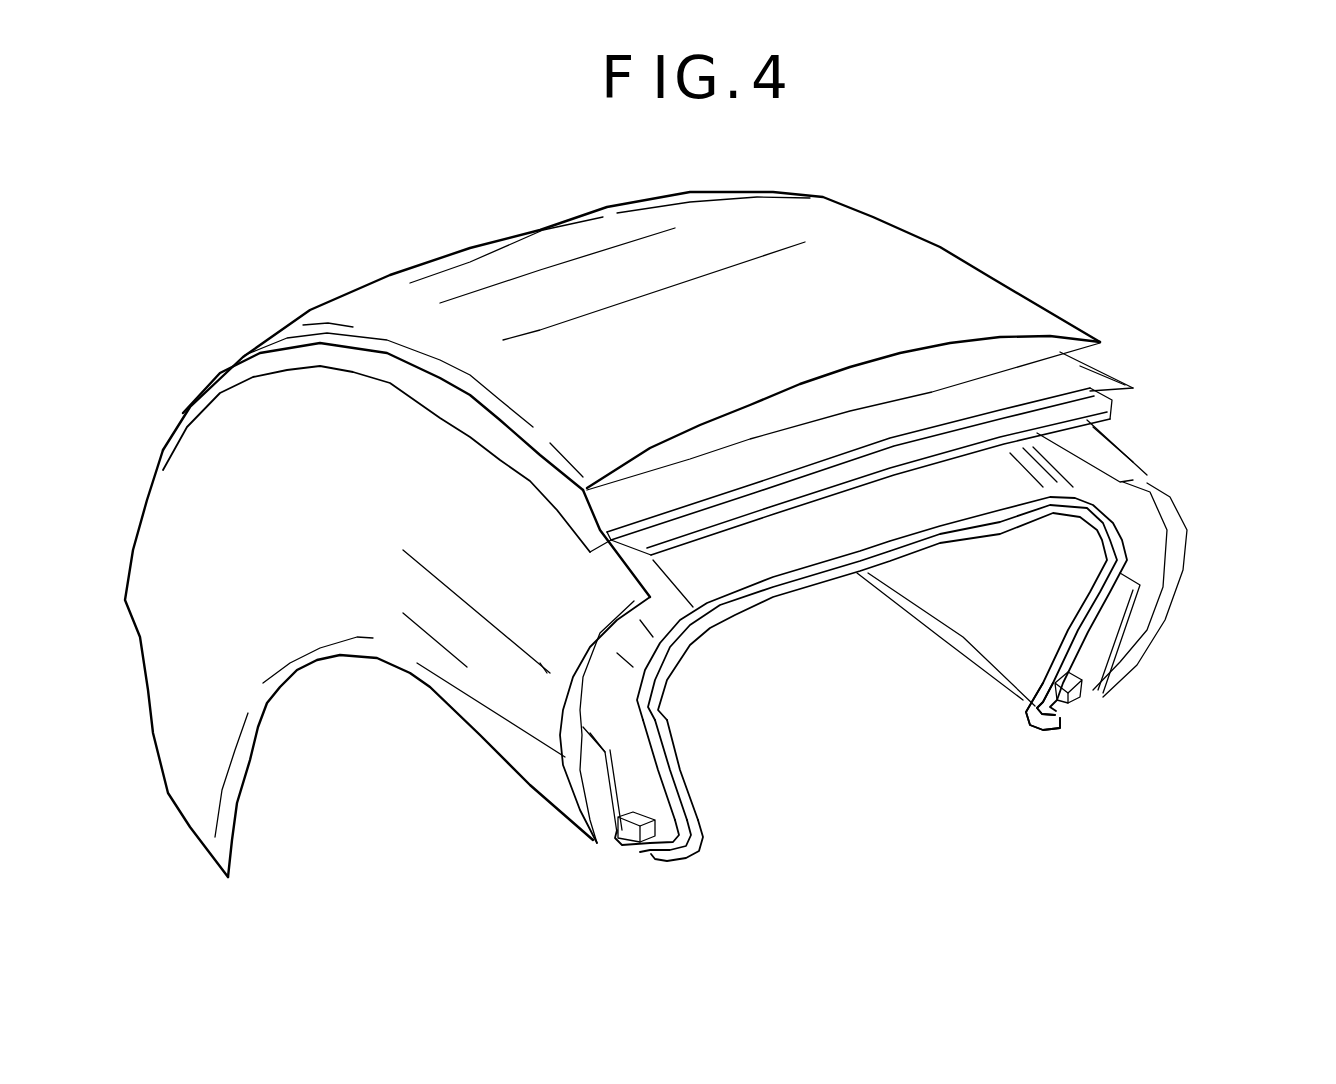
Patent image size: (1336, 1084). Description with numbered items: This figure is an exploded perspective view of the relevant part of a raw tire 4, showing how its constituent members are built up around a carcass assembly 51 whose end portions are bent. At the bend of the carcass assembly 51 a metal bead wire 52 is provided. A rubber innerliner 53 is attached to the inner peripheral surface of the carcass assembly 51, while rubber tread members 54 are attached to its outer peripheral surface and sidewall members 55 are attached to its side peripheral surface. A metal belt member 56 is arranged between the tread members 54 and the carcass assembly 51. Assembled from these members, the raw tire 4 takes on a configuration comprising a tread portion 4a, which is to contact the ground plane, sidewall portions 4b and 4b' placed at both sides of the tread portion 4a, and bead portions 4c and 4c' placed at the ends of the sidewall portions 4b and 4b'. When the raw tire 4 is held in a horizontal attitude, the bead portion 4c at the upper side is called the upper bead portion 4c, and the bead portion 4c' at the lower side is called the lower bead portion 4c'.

The raw tire 4 is at (657, 535).
The tread portion 4a is at (631, 407).
The sidewall portion 4b is at (1068, 563).
The sidewall portion 4b' is at (526, 696).
The upper bead portion 4c is at (1124, 722).
The lower bead portion 4c' is at (615, 877).
The carcass assembly 51 is at (882, 613).
The metal bead wire 52 is at (854, 768).
The rubber innerliner 53 is at (716, 770).
The rubber tread member 54 is at (860, 343).
The sidewall member 55 is at (876, 668).
The metal belt member 56 is at (923, 468).